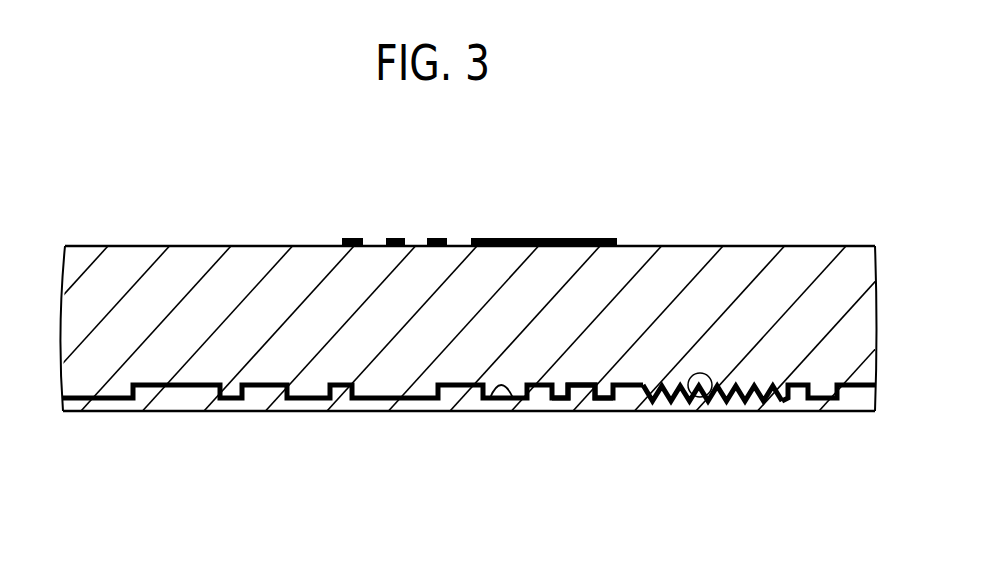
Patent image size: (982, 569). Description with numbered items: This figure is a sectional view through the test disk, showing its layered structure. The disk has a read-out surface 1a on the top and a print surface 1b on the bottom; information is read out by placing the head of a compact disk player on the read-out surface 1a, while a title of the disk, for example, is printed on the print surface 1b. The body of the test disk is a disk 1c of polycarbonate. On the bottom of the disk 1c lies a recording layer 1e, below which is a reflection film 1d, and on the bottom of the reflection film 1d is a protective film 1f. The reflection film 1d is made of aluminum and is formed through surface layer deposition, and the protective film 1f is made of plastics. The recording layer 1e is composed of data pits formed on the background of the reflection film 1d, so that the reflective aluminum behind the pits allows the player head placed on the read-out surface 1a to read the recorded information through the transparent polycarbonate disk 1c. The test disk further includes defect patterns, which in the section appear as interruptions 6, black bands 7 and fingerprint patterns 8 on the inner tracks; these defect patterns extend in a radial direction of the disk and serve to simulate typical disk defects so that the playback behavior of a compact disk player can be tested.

The read-out surface 1a is at (315, 245).
The print surface 1b is at (375, 412).
The disk 1c is at (743, 260).
The reflection film 1d is at (490, 405).
The recording layer 1e is at (566, 400).
The protective film 1f is at (203, 398).
The interruptions 6 is at (685, 399).
The black bands 7 is at (565, 243).
The fingerprint patterns 8 is at (394, 243).